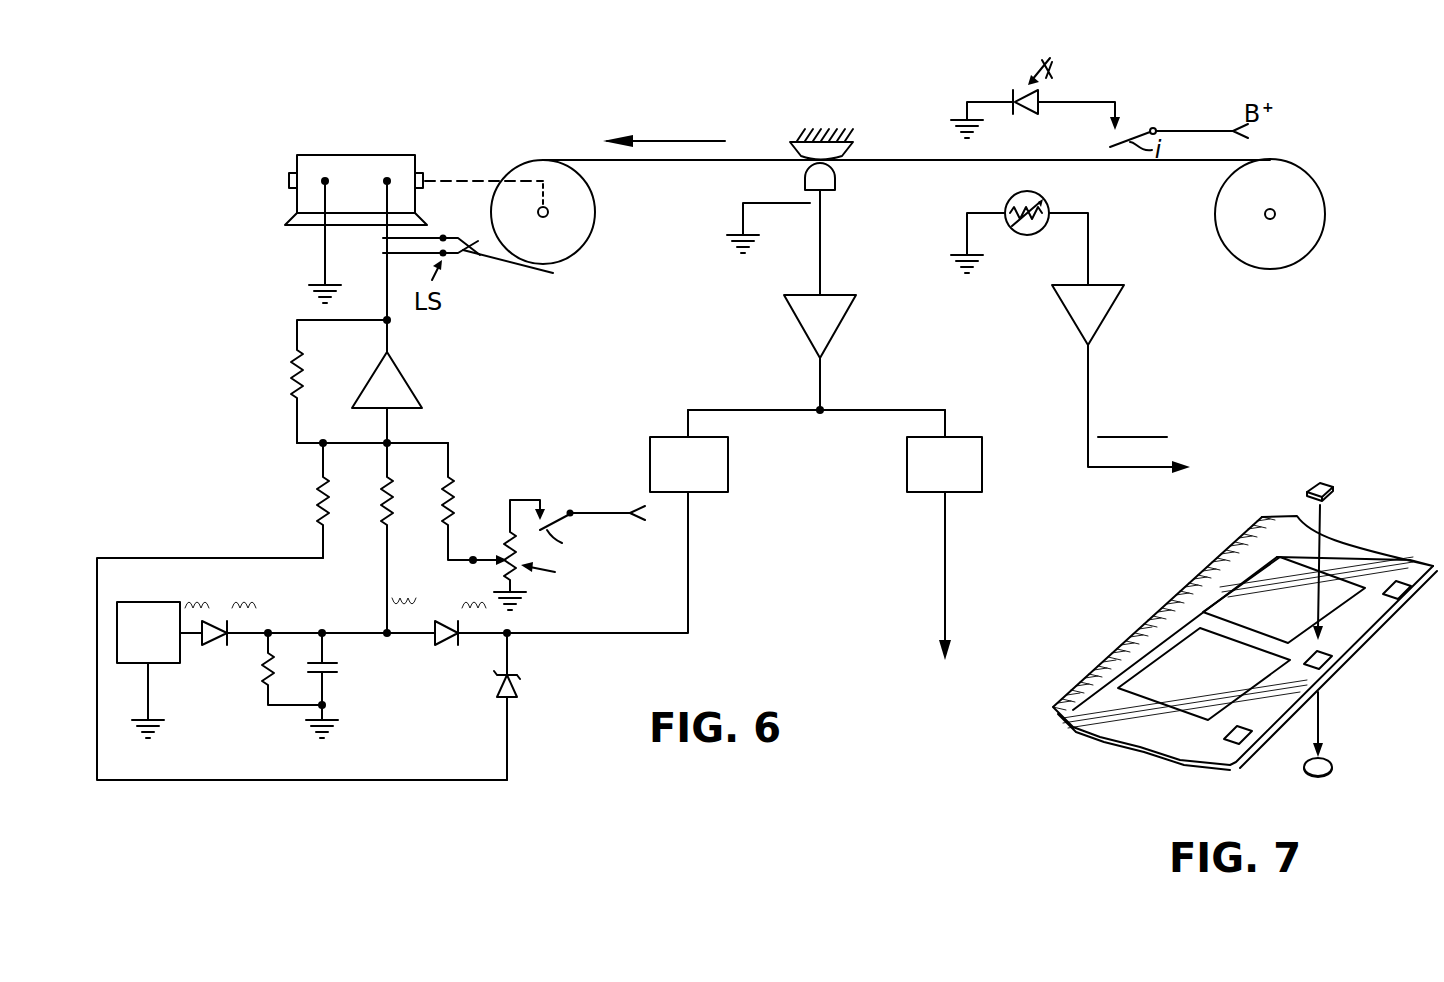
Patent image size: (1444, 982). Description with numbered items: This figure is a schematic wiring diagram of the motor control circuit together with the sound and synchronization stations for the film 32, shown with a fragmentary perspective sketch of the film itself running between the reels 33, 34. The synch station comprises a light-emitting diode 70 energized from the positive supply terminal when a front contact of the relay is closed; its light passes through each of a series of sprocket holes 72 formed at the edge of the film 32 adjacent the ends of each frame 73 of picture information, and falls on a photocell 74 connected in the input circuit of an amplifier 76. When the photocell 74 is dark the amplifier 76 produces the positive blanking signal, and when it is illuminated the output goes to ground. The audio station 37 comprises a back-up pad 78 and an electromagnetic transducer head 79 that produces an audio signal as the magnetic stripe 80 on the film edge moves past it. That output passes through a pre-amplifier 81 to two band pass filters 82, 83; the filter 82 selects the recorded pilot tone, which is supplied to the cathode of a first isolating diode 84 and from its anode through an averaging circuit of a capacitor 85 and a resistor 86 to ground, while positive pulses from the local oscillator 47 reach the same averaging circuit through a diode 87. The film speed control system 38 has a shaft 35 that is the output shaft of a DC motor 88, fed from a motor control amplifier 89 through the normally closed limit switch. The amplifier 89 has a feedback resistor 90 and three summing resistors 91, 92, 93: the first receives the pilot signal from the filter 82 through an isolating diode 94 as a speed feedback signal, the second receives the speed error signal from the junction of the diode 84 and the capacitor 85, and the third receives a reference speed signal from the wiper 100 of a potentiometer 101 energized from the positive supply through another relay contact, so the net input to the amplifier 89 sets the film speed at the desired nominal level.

In FIG. 6, the film 32 is at (880, 160).
In FIG. 7, the film 32 is at (1140, 730).
In FIG. 6, the take-up reel 33 is at (1303, 181).
In FIG. 6, the supply reel 34 is at (582, 246).
In FIG. 6, the shaft 35 is at (543, 183).
In FIG. 6, the audio station 37 is at (740, 199).
In FIG. 6, the film speed control system 38 is at (377, 210).
In FIG. 6, the local oscillator 47 is at (170, 602).
In FIG. 6, the light-emitting diode 70 is at (1036, 106).
In FIG. 7, the light-emitting diode 70 is at (1333, 489).
In FIG. 7, the sprocket holes 72 is at (1352, 662).
In FIG. 7, the frame 73 is at (1262, 528).
In FIG. 6, the photocell 74 is at (1046, 205).
In FIG. 7, the photocell 74 is at (1335, 765).
In FIG. 6, the amplifier 76 is at (1105, 300).
In FIG. 6, the back-up pad 78 is at (792, 148).
In FIG. 6, the electromagnetic transducer head 79 is at (836, 180).
In FIG. 7, the magnetic stripe 80 is at (1142, 636).
In FIG. 6, the pre-amplifier 81 is at (830, 322).
In FIG. 6, the band pass filter 82 is at (666, 437).
In FIG. 6, the band pass filter 83 is at (960, 437).
In FIG. 6, the first isolating diode 84 is at (447, 645).
In FIG. 6, the capacitor 85 is at (335, 668).
In FIG. 6, the resistor 86 is at (262, 676).
In FIG. 6, the diode 87 is at (213, 645).
In FIG. 6, the DC motor 88 is at (372, 155).
In FIG. 6, the motor control amplifier 89 is at (400, 378).
In FIG. 6, the feedback resistor 90 is at (292, 375).
In FIG. 6, the input summing resistor 91 is at (318, 495).
In FIG. 6, the input summing resistor 92 is at (382, 495).
In FIG. 6, the input summing resistor 93 is at (444, 495).
In FIG. 6, the isolating diode 94 is at (520, 688).
In FIG. 6, the wiper 100 is at (505, 556).
In FIG. 6, the potentiometer 101 is at (558, 575).